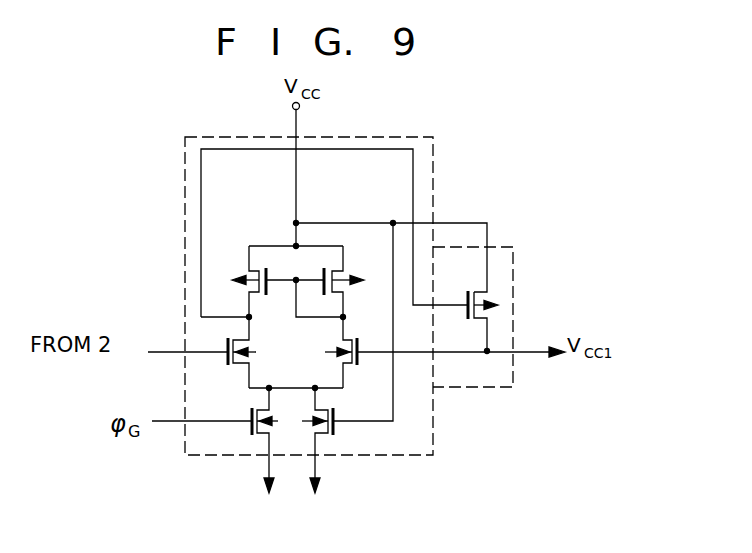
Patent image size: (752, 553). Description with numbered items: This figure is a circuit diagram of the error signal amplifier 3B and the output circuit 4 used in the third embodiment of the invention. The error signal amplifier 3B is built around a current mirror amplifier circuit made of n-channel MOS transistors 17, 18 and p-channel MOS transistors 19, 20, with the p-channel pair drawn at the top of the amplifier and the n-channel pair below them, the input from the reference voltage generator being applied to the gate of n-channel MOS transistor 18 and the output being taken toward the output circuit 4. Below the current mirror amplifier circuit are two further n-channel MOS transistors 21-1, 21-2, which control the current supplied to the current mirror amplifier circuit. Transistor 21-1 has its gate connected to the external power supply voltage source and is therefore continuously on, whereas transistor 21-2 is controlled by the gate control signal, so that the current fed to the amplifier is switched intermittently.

The error signal amplifier 3B is at (434, 138).
The output circuit 4 is at (512, 247).
The p-channel MOS transistor 20 is at (248, 272).
The p-channel MOS transistor 19 is at (344, 272).
The n-channel MOS transistor 18 is at (250, 345).
The n-channel MOS transistor 17 is at (337, 346).
The n-channel MOS transistor 21-2 is at (245, 430).
The n-channel MOS transistor 21-1 is at (333, 432).